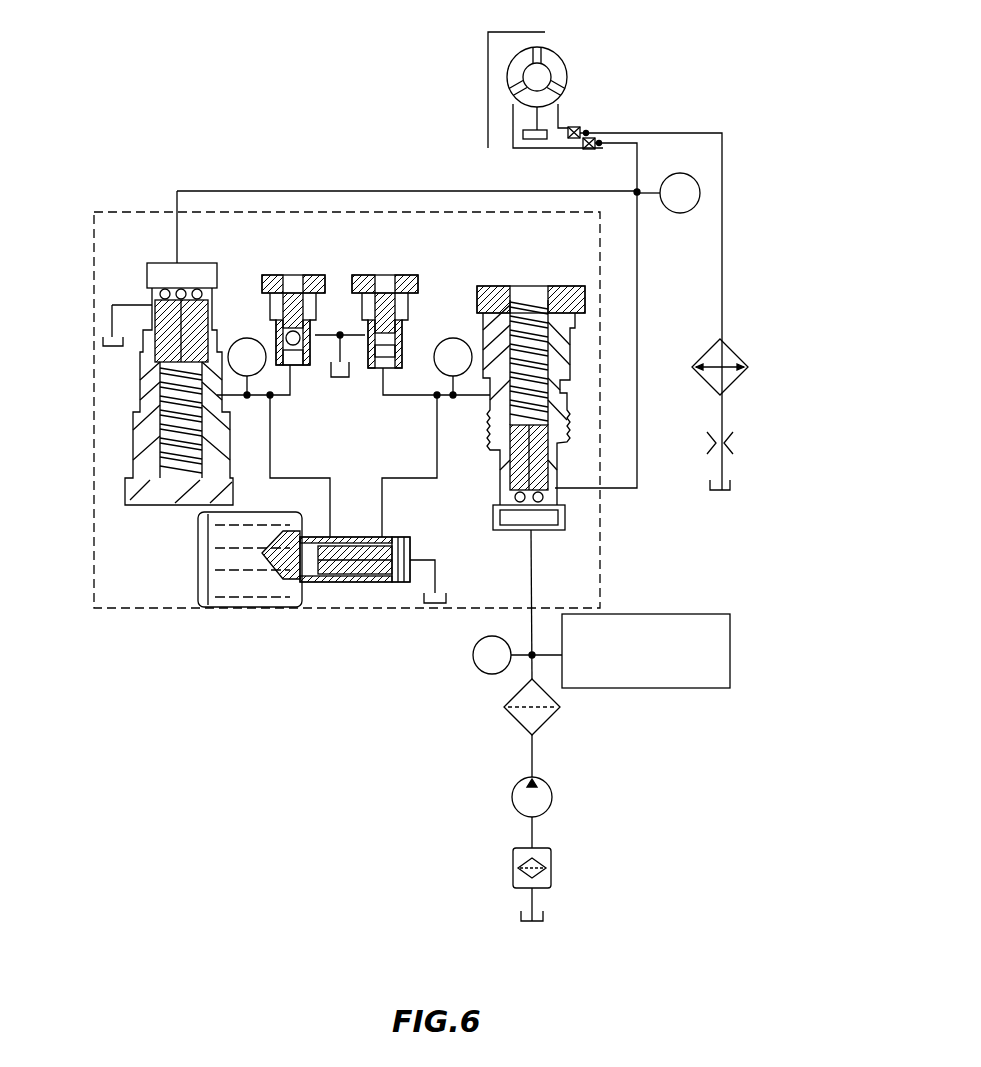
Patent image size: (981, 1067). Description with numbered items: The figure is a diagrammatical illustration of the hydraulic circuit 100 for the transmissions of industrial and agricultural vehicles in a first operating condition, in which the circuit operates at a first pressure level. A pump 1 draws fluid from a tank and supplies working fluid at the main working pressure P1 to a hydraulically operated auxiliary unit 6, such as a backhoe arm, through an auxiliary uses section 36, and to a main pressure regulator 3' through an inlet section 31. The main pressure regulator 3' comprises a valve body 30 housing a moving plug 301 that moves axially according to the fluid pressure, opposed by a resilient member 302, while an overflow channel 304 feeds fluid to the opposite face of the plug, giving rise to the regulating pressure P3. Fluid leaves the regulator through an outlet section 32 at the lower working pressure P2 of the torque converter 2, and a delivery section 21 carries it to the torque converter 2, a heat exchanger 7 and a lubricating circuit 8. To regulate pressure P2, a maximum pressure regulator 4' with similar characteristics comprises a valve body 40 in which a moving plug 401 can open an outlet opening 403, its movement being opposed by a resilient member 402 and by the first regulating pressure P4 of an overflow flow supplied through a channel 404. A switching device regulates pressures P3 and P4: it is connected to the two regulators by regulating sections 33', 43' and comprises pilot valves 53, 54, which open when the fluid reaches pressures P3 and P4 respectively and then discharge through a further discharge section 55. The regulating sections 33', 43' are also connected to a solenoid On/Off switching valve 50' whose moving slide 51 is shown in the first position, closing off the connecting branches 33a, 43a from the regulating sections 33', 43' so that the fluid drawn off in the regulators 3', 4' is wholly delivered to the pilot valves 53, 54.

The hydraulic circuit 100 is at (229, 86).
The torque converter 2 is at (565, 58).
The delivery section 21 is at (666, 128).
The main pressure regulator 3' is at (491, 197).
The valve body 30 is at (586, 301).
The moving plug 301 is at (558, 492).
The resilient member 302 is at (548, 392).
The overflow channel 304 is at (486, 490).
The inlet section 31 is at (536, 568).
The outlet section 32 is at (549, 410).
The regulating section 33' is at (459, 259).
The connecting branch 33a is at (428, 548).
The auxiliary uses section 36 is at (545, 658).
The maximum pressure regulator 4' is at (164, 592).
The valve body 40 is at (151, 425).
The moving plug 401 is at (158, 317).
The resilient member 402 is at (162, 452).
The outlet opening 403 is at (150, 296).
The channel 404 is at (158, 345).
The regulating section 43' is at (279, 268).
The connecting branch 43a is at (310, 558).
The switching valve 50' is at (250, 589).
The moving slide 51 is at (372, 583).
The pilot valve 53 is at (404, 277).
The pilot valve 54 is at (306, 277).
The discharge section 55 is at (338, 362).
The auxiliary unit 6 is at (714, 689).
The heat exchanger 7 is at (739, 352).
The lubricating circuit 8 is at (730, 443).
The pump 1 is at (553, 797).
The main working pressure P1 is at (517, 655).
The working pressure of torque converter P2 is at (667, 193).
The regulating pressure P3 is at (453, 366).
The first regulating pressure P4 is at (247, 366).